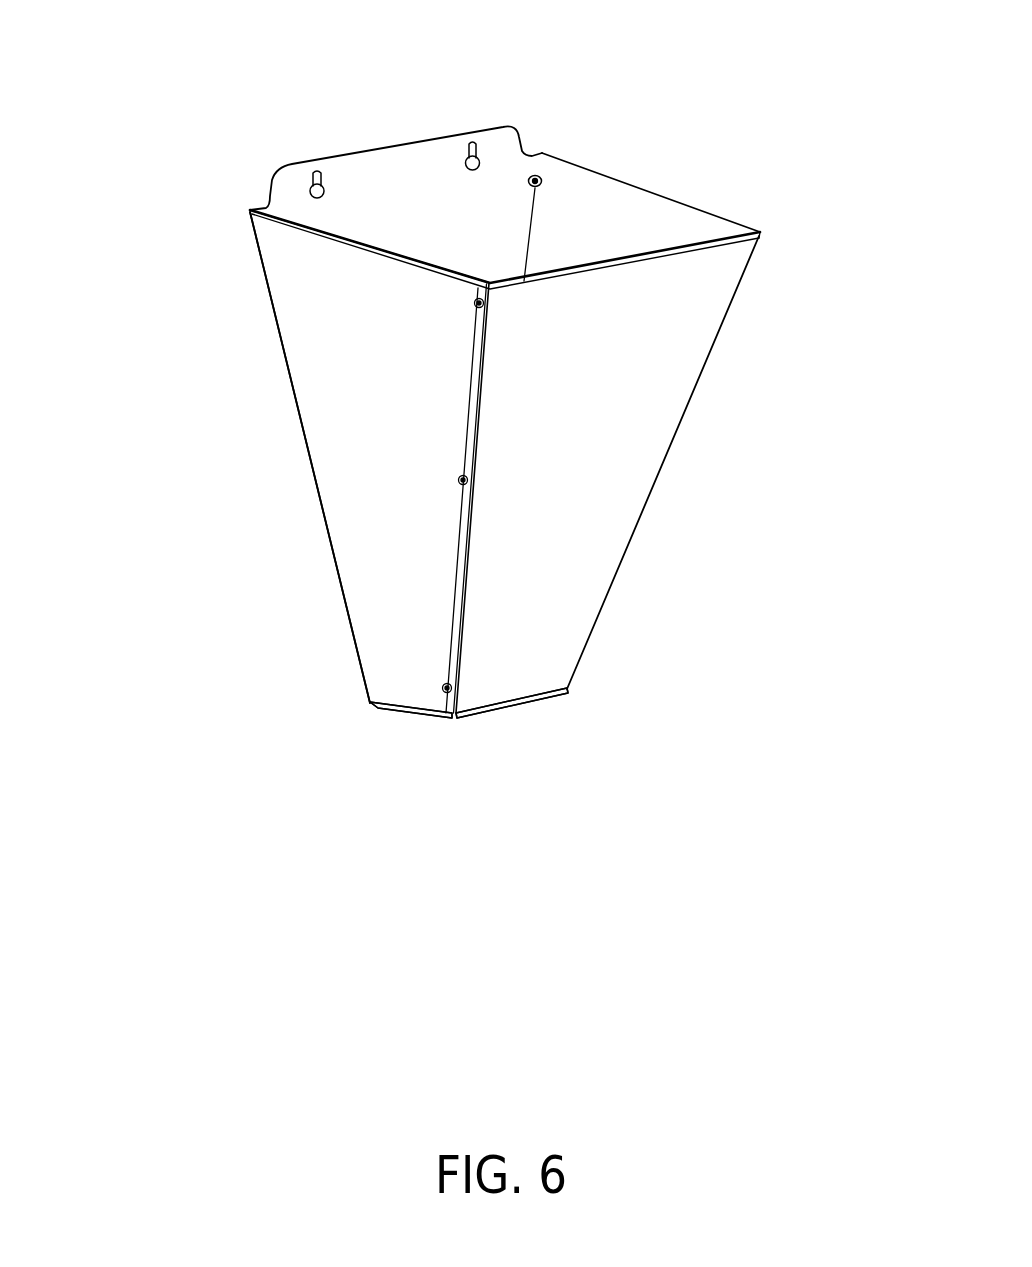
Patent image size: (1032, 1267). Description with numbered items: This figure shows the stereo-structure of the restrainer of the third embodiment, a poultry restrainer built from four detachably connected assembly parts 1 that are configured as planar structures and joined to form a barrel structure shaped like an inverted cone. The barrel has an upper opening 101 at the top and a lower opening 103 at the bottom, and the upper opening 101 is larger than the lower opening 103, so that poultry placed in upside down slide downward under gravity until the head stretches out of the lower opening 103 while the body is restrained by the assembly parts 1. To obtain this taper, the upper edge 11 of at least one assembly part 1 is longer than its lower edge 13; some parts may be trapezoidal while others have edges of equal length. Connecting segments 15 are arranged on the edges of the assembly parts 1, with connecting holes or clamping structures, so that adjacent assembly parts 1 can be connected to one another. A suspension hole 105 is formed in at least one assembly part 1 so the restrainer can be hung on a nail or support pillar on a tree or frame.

The assembly part 1 is at (590, 490).
The upper opening 101 is at (562, 230).
The lower opening 103 is at (503, 722).
The suspension hole 105 is at (318, 173).
The upper edge 11 is at (330, 233).
The lower edge 13 is at (408, 713).
The connecting segment 15 is at (468, 507).